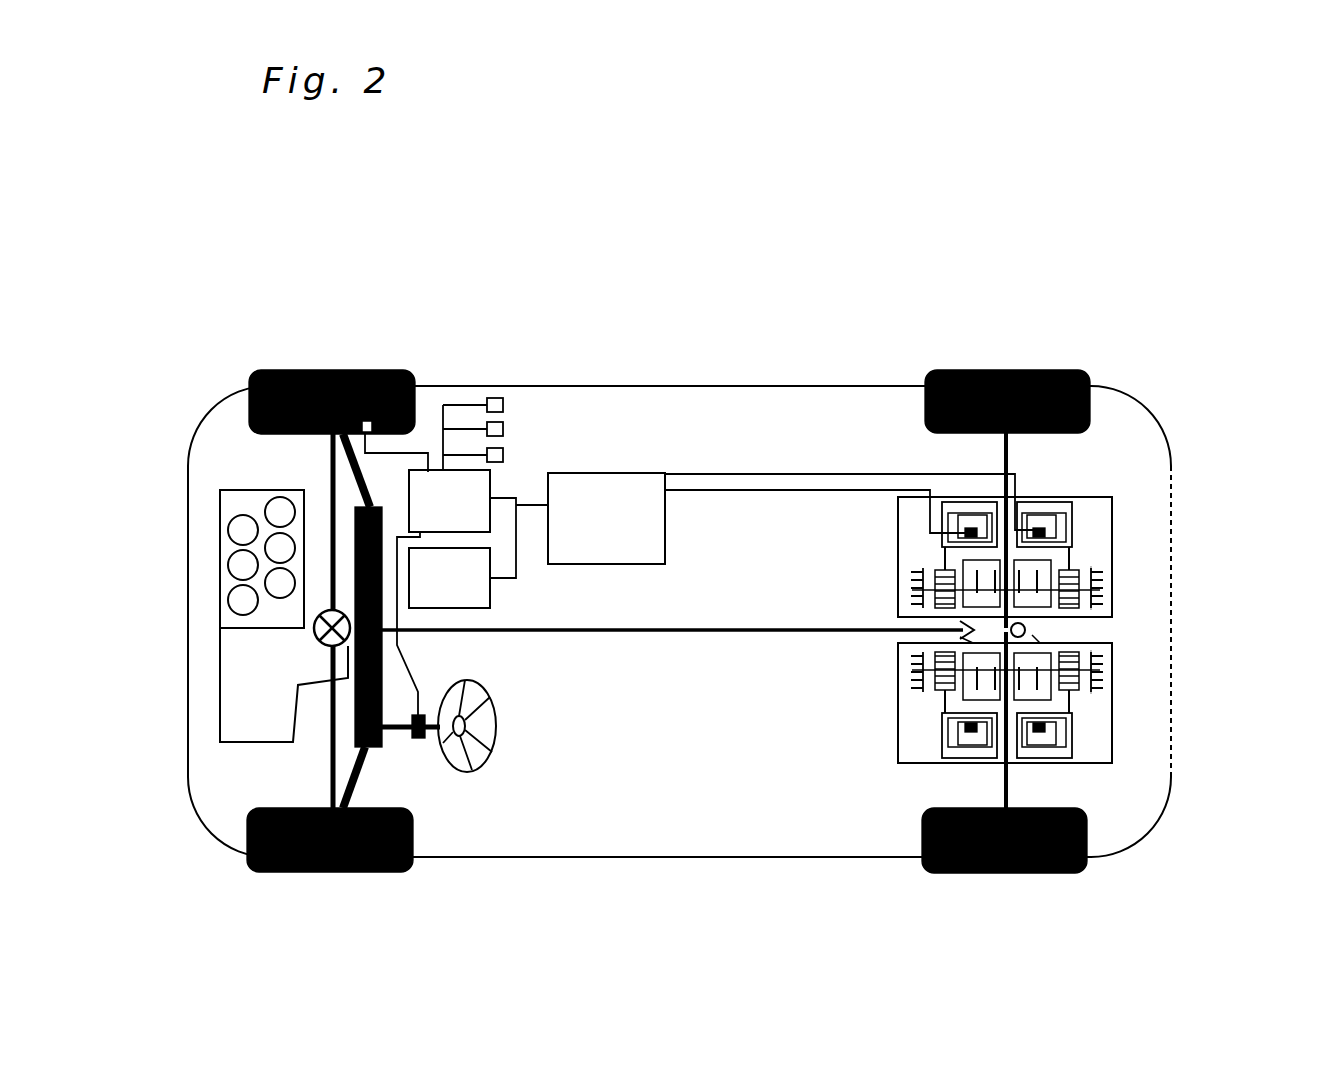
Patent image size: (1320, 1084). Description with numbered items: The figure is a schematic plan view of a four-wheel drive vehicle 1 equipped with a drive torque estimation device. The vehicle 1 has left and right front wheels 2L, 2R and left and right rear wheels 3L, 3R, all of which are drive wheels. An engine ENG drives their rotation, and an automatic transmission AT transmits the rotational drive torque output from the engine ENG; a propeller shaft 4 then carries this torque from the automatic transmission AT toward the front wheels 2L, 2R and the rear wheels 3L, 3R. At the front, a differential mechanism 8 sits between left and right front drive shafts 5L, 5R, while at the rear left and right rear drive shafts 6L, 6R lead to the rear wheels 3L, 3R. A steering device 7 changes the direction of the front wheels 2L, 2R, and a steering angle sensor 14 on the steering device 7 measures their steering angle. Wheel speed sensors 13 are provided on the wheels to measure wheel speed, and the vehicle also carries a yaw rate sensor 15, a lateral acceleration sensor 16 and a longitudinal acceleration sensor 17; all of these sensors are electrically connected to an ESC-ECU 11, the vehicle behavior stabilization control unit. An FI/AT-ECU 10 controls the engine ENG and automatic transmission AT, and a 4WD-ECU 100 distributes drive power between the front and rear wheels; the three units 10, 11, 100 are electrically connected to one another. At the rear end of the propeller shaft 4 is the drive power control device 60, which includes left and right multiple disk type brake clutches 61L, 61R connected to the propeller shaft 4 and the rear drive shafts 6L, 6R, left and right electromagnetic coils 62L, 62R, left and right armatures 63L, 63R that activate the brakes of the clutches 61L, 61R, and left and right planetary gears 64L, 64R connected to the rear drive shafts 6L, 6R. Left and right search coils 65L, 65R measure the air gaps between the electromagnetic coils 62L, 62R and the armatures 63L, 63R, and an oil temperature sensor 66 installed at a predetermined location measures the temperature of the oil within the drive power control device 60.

The four-wheel drive vehicle 1 is at (1180, 278).
The left front wheel 2L is at (338, 370).
The right front wheel 2R is at (332, 873).
The left rear wheel 3L is at (1008, 370).
The right rear wheel 3R is at (1000, 874).
The propeller shaft 4 is at (716, 633).
The left front drive shaft 5L is at (333, 475).
The right front drive shaft 5R is at (328, 775).
The left rear drive shaft 6L is at (1003, 458).
The right rear drive shaft 6R is at (1002, 790).
The steering device 7 is at (380, 647).
The differential mechanism 8 is at (313, 637).
The FI/AT-ECU 10 is at (430, 592).
The ESC-ECU 11 is at (433, 516).
The wheel speed sensor 13 is at (360, 435).
The steering angle sensor 14 is at (418, 738).
The yaw rate sensor 15 is at (503, 405).
The lateral acceleration sensor 16 is at (503, 429).
The longitudinal acceleration sensor 17 is at (503, 455).
The drive power control device 60 is at (892, 761).
The left multiple disk type brake clutch 61L is at (1103, 590).
The right multiple disk type brake clutch 61R is at (1103, 668).
The left electromagnetic coil 62L is at (1052, 527).
The right electromagnetic coil 62R is at (1040, 735).
The left armature 63L is at (1038, 507).
The right armature 63R is at (1042, 753).
The left planetary gear 64L is at (1067, 563).
The right planetary gear 64R is at (1067, 695).
The left search coil 65L is at (940, 534).
The right search coil 65R is at (963, 727).
The oil temperature sensor 66 is at (1027, 628).
The 4WD-ECU 100 is at (578, 533).
The engine ENG is at (227, 542).
The automatic transmission AT is at (227, 703).